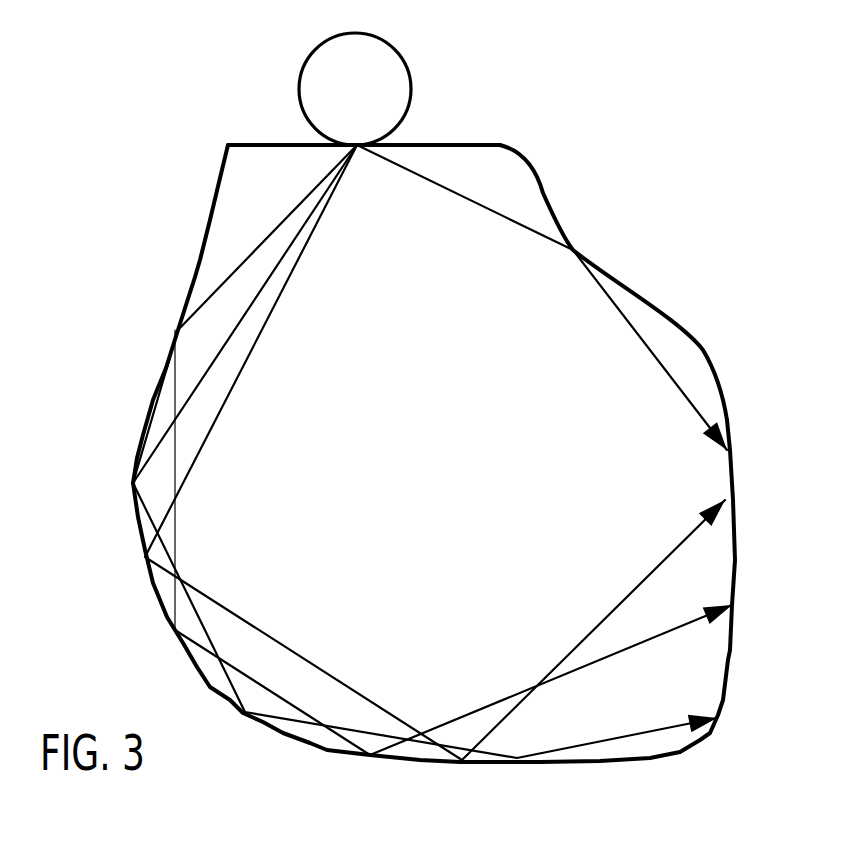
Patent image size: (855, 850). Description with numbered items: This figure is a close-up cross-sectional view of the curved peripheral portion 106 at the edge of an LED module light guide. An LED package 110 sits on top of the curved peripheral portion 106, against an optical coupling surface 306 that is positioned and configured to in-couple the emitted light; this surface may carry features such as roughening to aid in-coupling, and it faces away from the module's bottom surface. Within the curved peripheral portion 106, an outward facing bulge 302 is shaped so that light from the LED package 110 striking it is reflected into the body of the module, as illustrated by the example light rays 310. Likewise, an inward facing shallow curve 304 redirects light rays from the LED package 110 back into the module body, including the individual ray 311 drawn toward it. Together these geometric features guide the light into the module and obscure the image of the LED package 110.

The LED package 110 is at (310, 48).
The curved peripheral portion 106 is at (390, 426).
The optical coupling surface 306 is at (279, 144).
The inward facing shallow curve 304 is at (607, 277).
The outward facing bulge 302 is at (137, 448).
The light rays 310 is at (205, 645).
The light ray 311 is at (480, 206).